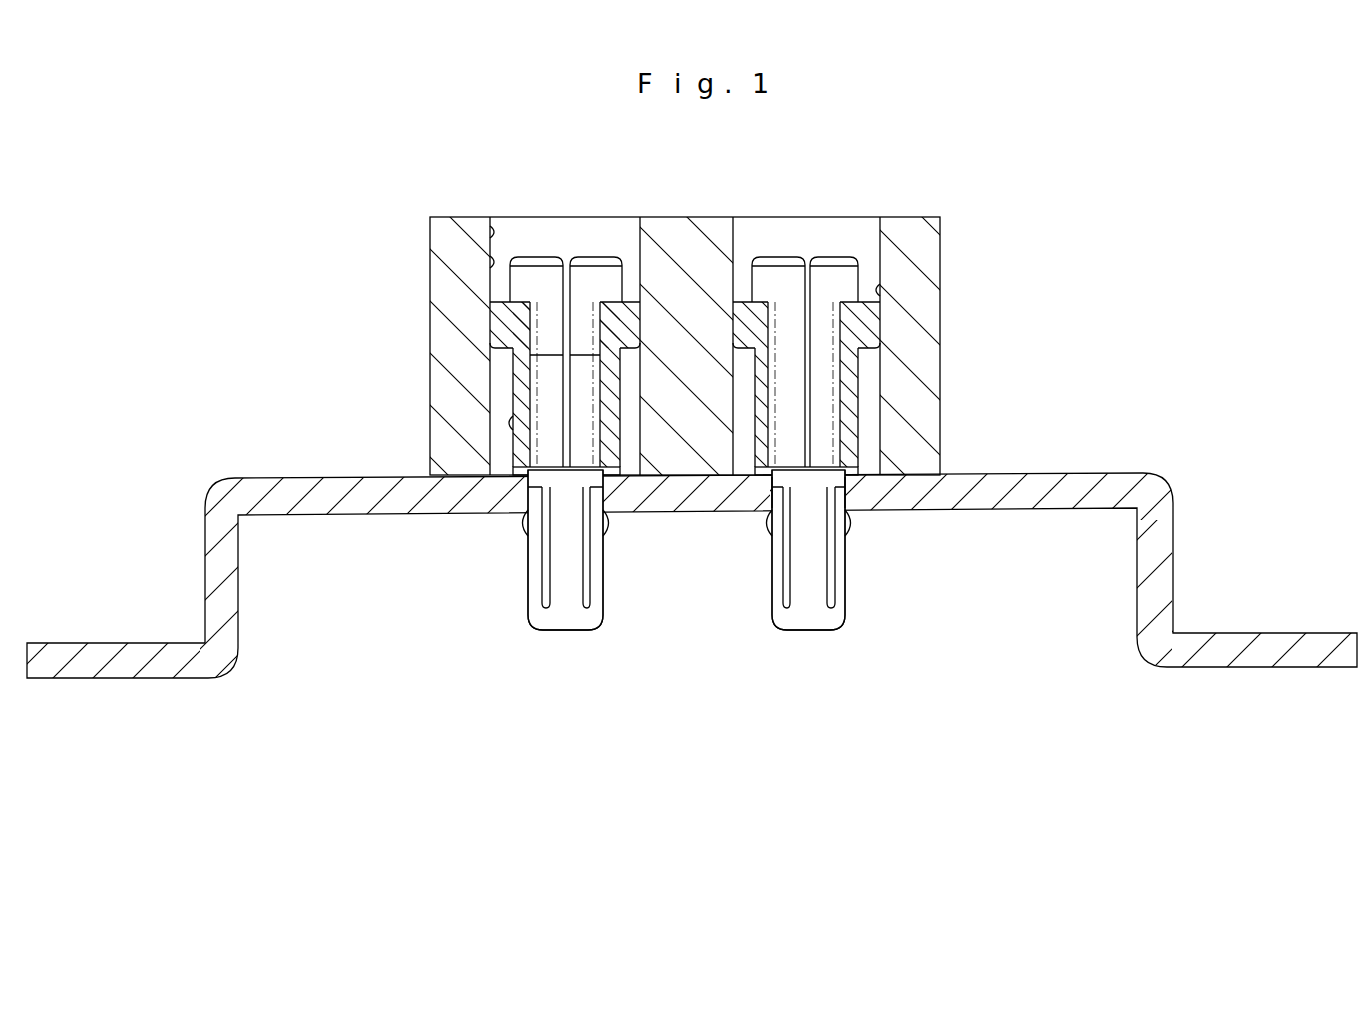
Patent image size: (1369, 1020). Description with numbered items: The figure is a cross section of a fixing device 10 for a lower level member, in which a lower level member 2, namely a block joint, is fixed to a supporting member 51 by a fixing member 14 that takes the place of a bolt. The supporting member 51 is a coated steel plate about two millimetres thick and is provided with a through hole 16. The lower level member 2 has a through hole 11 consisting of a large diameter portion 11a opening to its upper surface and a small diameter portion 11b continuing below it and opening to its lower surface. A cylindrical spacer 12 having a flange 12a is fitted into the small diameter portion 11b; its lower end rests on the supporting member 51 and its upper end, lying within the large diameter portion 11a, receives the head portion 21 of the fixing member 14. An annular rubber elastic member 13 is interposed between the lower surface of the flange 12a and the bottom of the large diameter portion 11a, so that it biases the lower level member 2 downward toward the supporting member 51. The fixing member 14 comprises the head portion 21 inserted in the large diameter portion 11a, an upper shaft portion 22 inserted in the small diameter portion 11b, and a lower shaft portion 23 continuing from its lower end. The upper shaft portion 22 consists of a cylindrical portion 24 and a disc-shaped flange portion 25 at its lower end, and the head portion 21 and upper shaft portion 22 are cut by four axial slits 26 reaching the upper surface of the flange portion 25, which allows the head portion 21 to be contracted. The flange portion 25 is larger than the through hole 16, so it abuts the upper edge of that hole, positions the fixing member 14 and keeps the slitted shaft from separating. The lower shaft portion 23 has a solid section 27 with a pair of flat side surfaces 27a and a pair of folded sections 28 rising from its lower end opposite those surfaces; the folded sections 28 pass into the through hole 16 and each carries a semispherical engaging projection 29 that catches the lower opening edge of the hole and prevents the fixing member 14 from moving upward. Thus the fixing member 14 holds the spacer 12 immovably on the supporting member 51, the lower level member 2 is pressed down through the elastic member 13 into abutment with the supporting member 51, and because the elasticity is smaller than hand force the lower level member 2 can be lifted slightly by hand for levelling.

The lower level member 2 is at (679, 340).
The fixing device 10 is at (900, 190).
The through hole 11 is at (490, 272).
The large diameter portion 11a is at (487, 238).
The small diameter portion 11b is at (507, 425).
The spacer 12 is at (852, 387).
The flange 12a is at (882, 296).
The elastic member 13 is at (872, 326).
The fixing member 14 is at (537, 248).
The through hole 16 is at (847, 495).
The head portion 21 is at (640, 417).
The upper shaft portion 22 is at (537, 393).
The lower shaft portion 23 is at (664, 584).
The cylindrical portion 24 is at (540, 358).
The flange portion 25 is at (513, 468).
The slit 26 is at (567, 258).
The solid section 27 is at (570, 585).
The flat side surface 27a is at (547, 590).
The folded section 28 is at (533, 500).
The engaging projection 29 is at (607, 522).
The supporting member 51 is at (1173, 545).